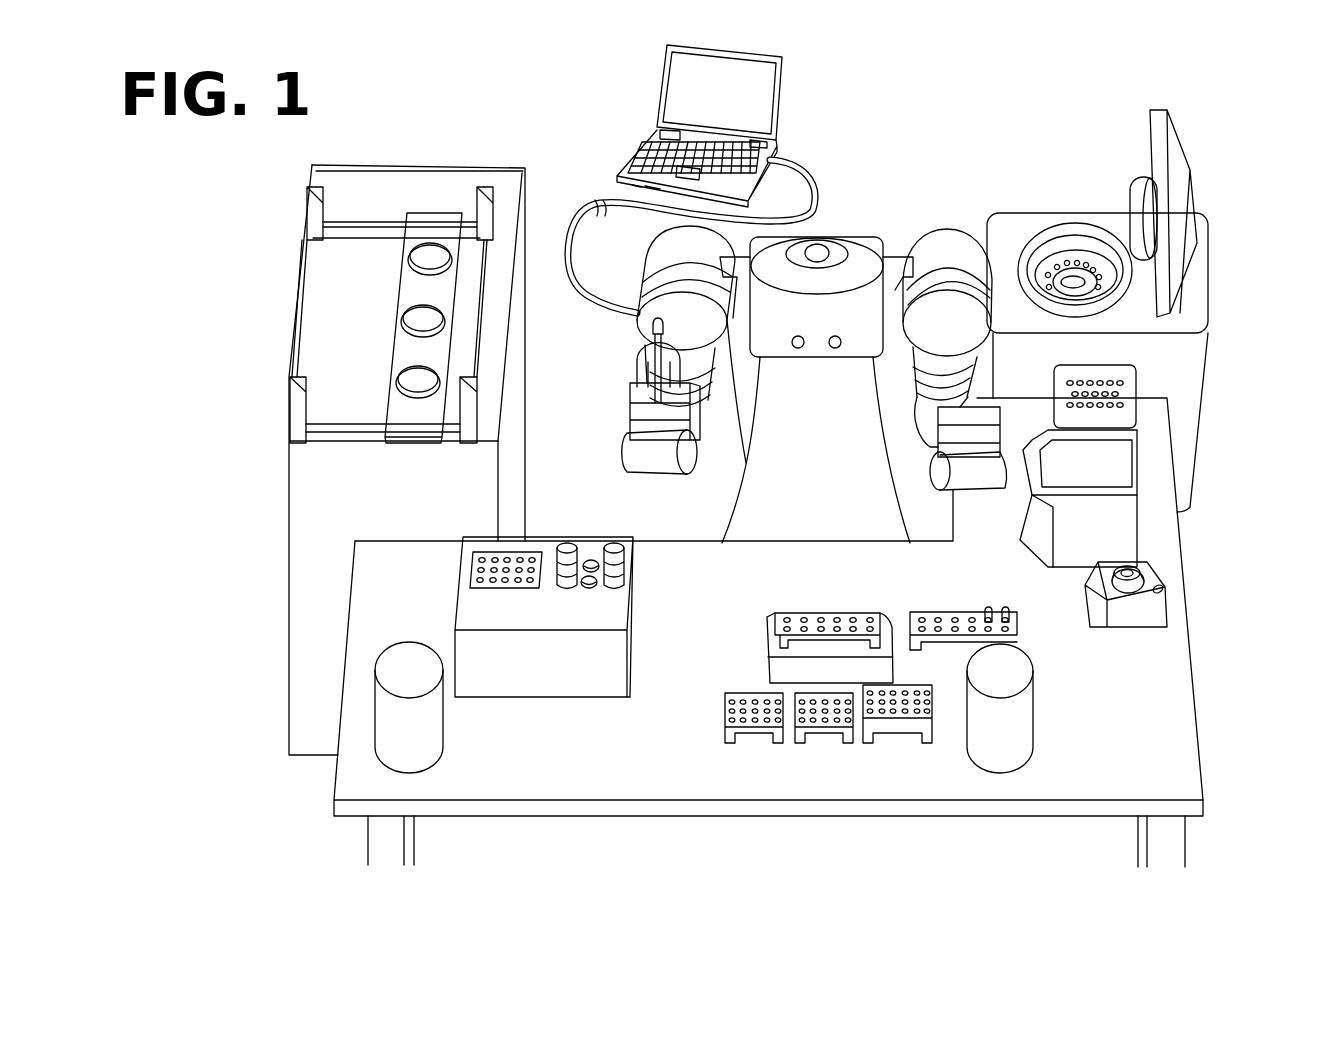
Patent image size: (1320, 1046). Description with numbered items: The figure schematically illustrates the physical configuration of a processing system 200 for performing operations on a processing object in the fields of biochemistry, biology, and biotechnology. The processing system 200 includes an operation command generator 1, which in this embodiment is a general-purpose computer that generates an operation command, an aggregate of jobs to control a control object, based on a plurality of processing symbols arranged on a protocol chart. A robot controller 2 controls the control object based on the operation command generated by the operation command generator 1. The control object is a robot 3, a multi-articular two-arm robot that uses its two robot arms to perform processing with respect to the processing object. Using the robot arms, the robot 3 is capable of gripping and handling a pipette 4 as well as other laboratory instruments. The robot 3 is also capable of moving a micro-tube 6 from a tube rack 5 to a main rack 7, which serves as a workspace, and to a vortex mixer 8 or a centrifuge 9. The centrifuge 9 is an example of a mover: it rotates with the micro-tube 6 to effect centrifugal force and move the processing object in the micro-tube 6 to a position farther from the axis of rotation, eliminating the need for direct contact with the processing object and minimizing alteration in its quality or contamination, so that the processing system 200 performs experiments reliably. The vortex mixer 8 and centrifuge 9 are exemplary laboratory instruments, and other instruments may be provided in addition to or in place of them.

The operation command generator 1 is at (784, 84).
The robot controller 2 is at (733, 507).
The robot 3 is at (865, 240).
The pipette 4 is at (650, 338).
The tube rack 5 is at (933, 613).
The micro-tube 6 is at (987, 608).
The main rack 7 is at (865, 613).
The vortex mixer 8 is at (1097, 604).
The centrifuge 9 is at (1203, 378).
The processing system 200 is at (247, 657).